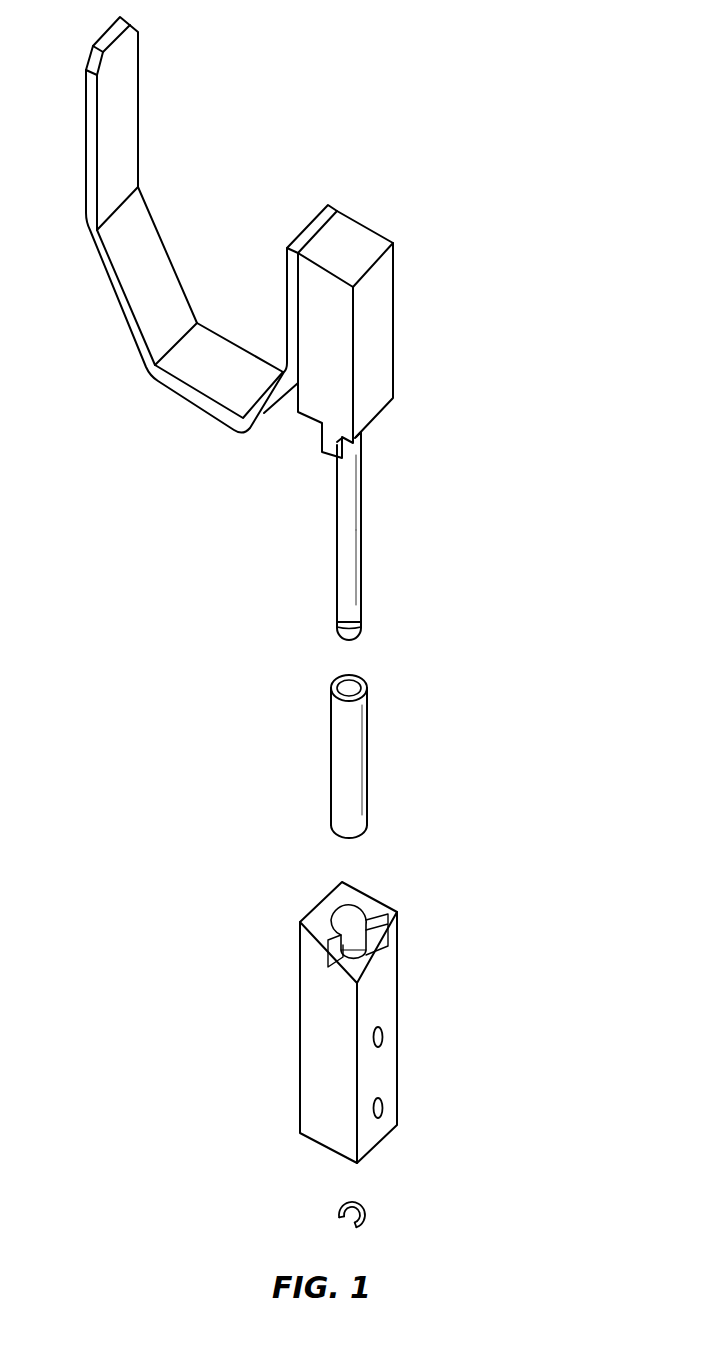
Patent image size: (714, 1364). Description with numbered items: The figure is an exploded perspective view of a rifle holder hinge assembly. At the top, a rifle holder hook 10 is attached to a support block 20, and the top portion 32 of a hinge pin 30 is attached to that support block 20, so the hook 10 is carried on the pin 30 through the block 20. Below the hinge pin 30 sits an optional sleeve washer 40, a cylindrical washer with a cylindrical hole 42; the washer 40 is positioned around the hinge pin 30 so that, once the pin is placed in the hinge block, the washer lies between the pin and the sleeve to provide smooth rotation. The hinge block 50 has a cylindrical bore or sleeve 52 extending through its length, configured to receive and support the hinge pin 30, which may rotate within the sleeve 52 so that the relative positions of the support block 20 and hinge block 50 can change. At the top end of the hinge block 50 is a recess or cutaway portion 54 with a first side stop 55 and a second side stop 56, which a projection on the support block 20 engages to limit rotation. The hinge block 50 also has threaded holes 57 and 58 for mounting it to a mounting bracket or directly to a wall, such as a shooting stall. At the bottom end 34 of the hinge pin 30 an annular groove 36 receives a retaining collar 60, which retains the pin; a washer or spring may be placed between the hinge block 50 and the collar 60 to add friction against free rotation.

The rifle holder hook 10 is at (142, 58).
The support block 20 is at (395, 301).
The hinge pin 30 is at (362, 529).
The top portion 32 is at (349, 478).
The bottom end 34 is at (350, 610).
The annular groove 36 is at (337, 624).
The sleeve washer 40 is at (368, 747).
The cylindrical hole 42 is at (352, 685).
The hinge block 50 is at (398, 978).
The sleeve 52 is at (352, 917).
The recess or cutaway portion 54 is at (355, 962).
The first side stop 55 is at (330, 947).
The second side stop 56 is at (382, 932).
The threaded hole 57 is at (383, 1037).
The threaded hole 58 is at (383, 1107).
The retaining collar 60 is at (373, 1210).